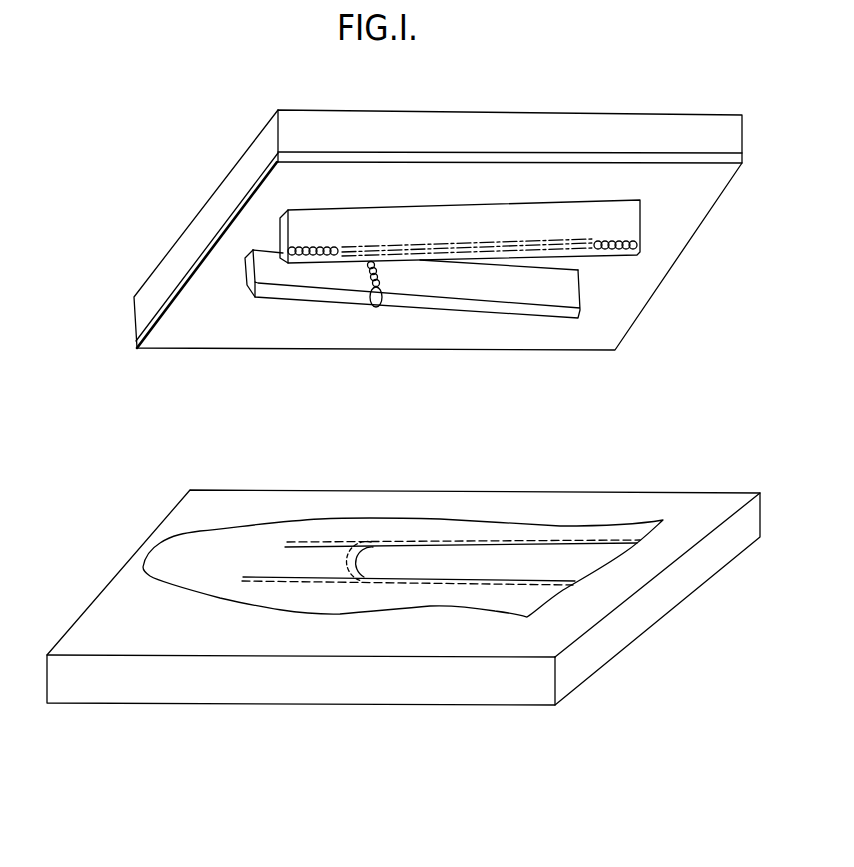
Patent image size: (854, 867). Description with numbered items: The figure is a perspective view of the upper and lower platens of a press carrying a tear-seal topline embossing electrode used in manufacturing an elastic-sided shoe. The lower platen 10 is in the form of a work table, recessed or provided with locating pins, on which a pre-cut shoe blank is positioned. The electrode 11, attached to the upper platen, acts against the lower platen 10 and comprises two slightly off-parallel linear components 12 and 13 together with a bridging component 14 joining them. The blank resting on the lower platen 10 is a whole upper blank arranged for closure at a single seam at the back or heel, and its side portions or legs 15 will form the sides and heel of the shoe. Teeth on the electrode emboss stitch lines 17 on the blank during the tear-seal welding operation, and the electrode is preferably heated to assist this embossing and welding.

The lower platen 10 is at (407, 693).
The electrode 11 is at (438, 248).
The linear component 12 is at (640, 208).
The linear component 13 is at (550, 303).
The bridging component 14 is at (380, 304).
The side portions or legs 15 is at (542, 598).
The stitch lines 17 is at (270, 580).